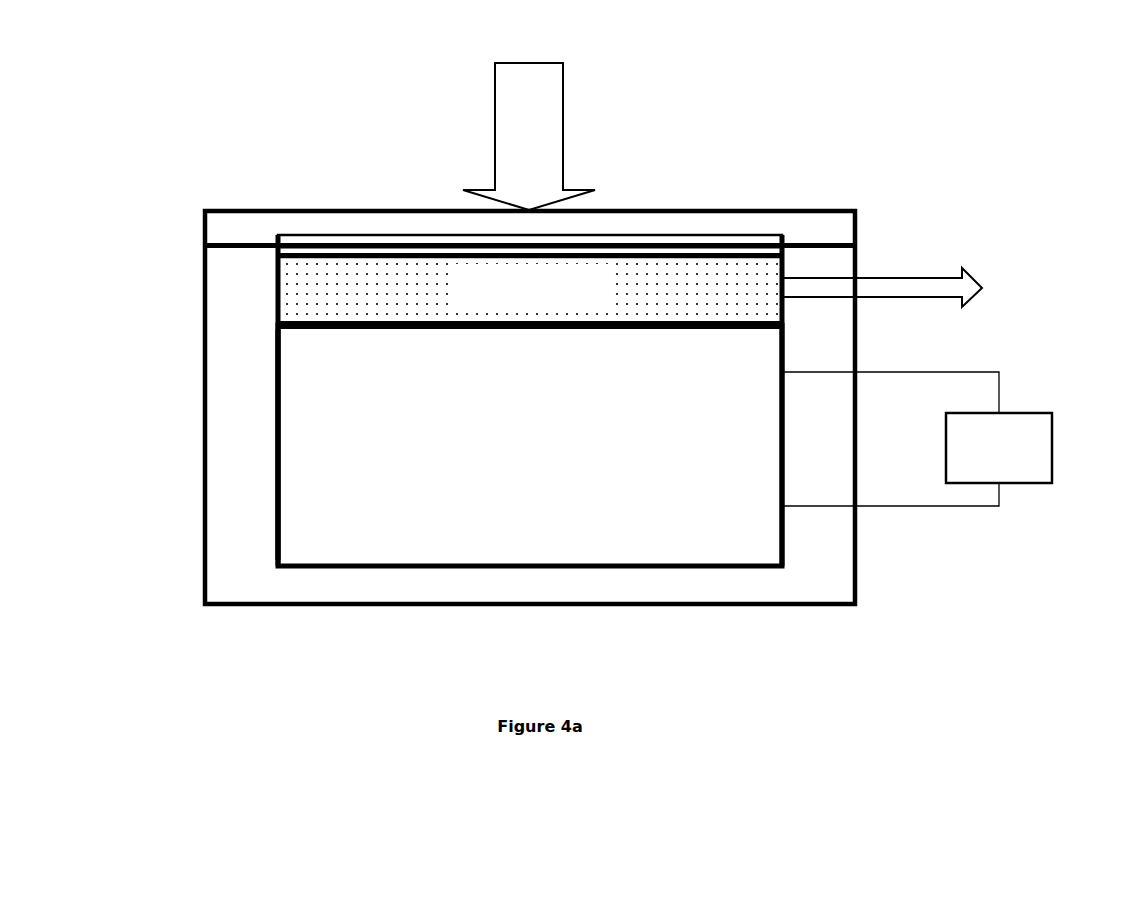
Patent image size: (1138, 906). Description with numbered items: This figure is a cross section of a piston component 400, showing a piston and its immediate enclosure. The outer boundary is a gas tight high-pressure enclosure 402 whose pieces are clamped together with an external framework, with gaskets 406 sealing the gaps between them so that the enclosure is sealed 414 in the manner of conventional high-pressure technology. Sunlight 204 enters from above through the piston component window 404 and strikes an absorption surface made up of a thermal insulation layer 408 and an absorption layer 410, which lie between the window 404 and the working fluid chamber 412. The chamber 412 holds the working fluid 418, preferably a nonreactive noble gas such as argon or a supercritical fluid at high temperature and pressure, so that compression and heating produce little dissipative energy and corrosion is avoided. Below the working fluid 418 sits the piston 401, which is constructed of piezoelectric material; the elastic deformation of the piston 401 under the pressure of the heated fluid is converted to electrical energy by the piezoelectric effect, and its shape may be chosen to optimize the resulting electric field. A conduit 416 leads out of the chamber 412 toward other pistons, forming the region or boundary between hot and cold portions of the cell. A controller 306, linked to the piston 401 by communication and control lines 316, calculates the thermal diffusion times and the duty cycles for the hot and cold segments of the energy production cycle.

The piston component 400 is at (243, 152).
The high-pressure enclosure 402 is at (203, 588).
The piston component window 404 is at (383, 210).
The gasket 406 is at (205, 249).
The thermal insulation layer 408 is at (713, 243).
The absorption layer 410 is at (277, 255).
The working fluid chamber 412 is at (277, 288).
The seal 414 is at (277, 400).
The conduit 416 is at (900, 277).
The working fluid 418 is at (530, 289).
The piston 401 is at (530, 445).
The sunlight 204 is at (529, 136).
The controller 306 is at (999, 448).
The communication/control lines 316 is at (997, 552).